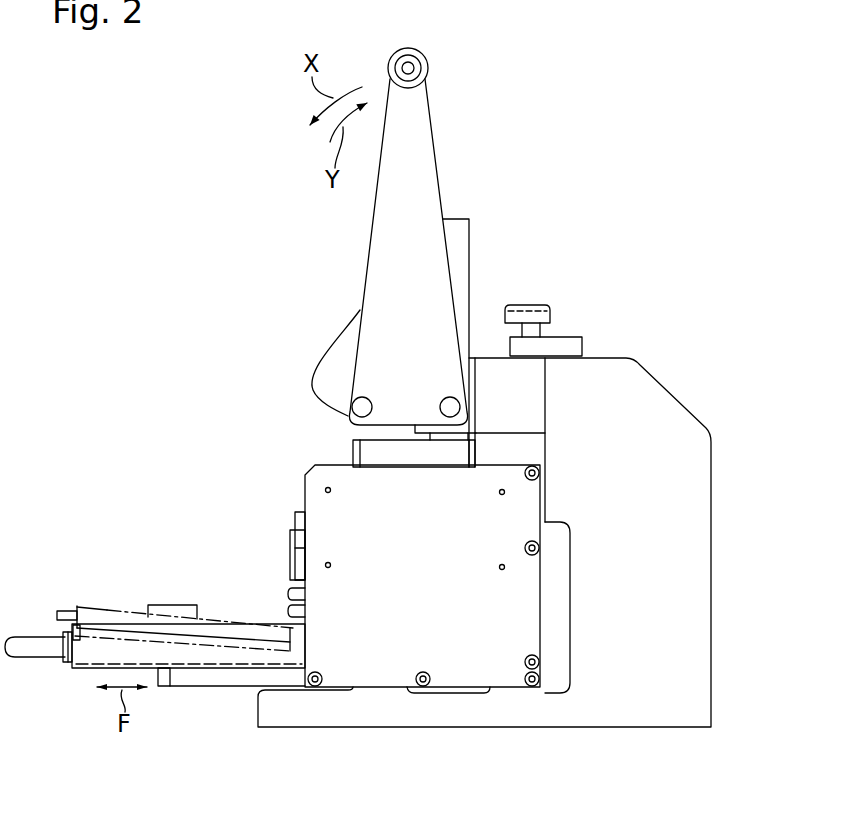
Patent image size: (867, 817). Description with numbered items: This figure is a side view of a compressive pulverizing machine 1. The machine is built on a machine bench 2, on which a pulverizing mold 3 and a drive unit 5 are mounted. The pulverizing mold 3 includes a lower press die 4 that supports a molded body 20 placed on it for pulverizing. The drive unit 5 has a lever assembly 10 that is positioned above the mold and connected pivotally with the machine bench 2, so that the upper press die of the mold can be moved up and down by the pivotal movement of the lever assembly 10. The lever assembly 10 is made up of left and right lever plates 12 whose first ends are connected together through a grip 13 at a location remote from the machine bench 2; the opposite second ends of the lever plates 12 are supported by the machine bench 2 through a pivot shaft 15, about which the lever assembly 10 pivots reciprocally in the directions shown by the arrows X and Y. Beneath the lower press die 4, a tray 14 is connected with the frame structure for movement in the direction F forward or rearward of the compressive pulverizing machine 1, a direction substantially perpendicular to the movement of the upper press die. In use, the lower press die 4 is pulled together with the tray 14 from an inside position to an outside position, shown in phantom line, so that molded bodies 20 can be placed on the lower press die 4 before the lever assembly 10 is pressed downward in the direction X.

The compressive pulverizing machine 1 is at (606, 215).
The machine bench 2 is at (680, 417).
The pulverizing mold 3 is at (317, 483).
The lower press die 4 is at (90, 613).
The drive unit 5 is at (441, 58).
The lever assembly 10 is at (432, 110).
The lever plates 12 is at (423, 174).
The grip 13 is at (394, 54).
The tray 14 is at (90, 672).
The pivot shaft 15 is at (452, 402).
The molded body 20 is at (168, 603).